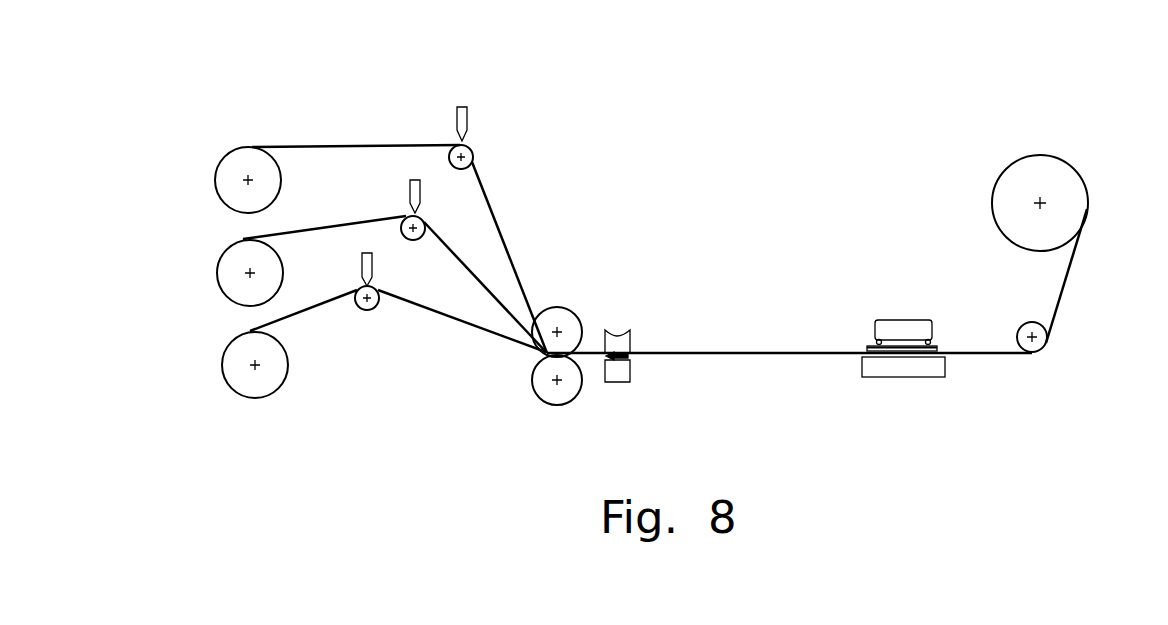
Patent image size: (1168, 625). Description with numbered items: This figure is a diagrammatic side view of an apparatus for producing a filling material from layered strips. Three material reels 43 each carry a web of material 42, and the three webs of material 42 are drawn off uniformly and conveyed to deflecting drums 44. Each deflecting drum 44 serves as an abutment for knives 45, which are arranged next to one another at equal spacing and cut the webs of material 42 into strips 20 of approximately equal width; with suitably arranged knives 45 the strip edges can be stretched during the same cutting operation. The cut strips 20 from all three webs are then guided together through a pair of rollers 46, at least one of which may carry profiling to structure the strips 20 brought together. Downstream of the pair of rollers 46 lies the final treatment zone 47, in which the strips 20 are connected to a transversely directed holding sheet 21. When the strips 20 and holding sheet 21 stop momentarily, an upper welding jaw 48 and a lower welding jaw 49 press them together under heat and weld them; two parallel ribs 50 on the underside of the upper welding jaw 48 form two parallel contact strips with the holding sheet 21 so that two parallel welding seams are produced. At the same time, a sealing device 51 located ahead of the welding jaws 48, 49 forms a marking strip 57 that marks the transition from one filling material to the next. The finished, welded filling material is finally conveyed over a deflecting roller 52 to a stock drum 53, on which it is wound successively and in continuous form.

The strips 20 is at (473, 323).
The holding sheet 21 is at (885, 350).
The web of material 42 is at (318, 147).
The material reel 43 is at (242, 158).
The deflecting drum 44 is at (466, 168).
The knife 45 is at (457, 122).
The pair of rollers 46 is at (538, 358).
The final treatment zone 47 is at (769, 335).
The upper welding jaw 48 is at (898, 327).
The lower welding jaw 49 is at (915, 370).
The rib 50 is at (867, 347).
The sealing device 51 is at (620, 381).
The deflecting roller 52 is at (1037, 353).
The stock drum 53 is at (1075, 207).
The marking strip 57 is at (635, 353).